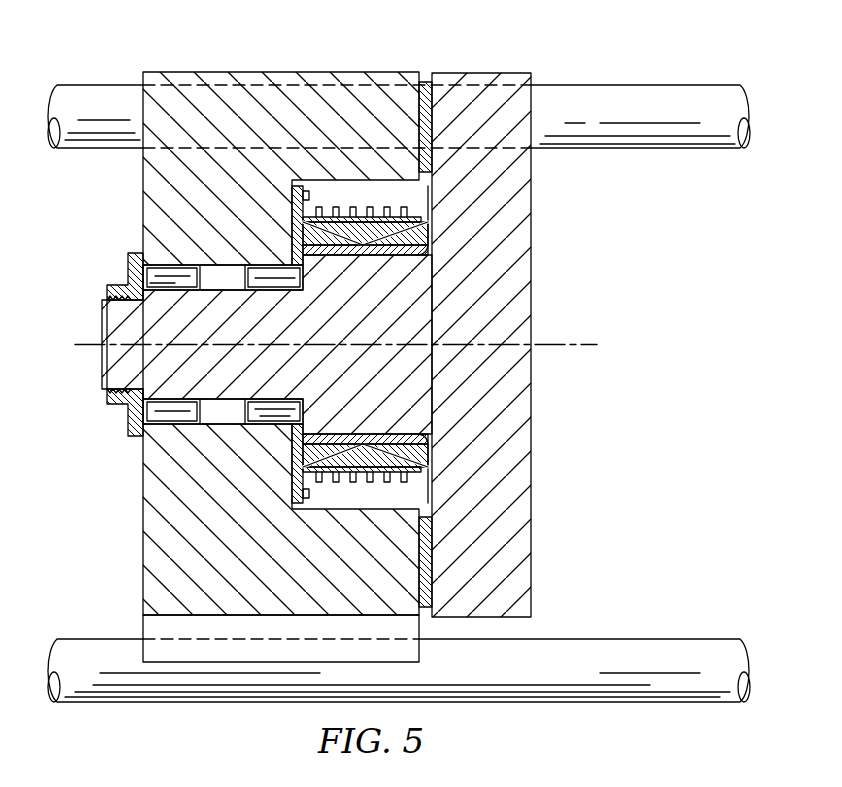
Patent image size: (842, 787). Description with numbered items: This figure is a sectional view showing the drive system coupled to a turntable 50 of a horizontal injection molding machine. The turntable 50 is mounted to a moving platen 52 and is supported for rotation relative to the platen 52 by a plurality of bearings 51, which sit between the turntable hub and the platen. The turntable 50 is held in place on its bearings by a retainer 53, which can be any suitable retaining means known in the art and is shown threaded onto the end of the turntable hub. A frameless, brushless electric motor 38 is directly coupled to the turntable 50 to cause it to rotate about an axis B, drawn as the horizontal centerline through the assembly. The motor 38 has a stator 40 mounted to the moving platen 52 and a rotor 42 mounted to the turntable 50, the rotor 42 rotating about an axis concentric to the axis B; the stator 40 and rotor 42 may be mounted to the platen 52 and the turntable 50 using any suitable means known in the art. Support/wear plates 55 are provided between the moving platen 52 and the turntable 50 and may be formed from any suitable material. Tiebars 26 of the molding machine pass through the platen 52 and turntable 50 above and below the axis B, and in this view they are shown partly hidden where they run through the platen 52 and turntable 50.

The tiebars 26 is at (88, 97).
The frameless, brushless electric motor 38 is at (408, 344).
The stator 40 is at (300, 232).
The rotor 42 is at (378, 256).
The turntable 50 is at (505, 492).
The bearings 51 is at (262, 416).
The moving platen 52 is at (165, 188).
The retainer 53 is at (128, 418).
The support/wear plates 55 is at (422, 97).
The axis B is at (565, 345).